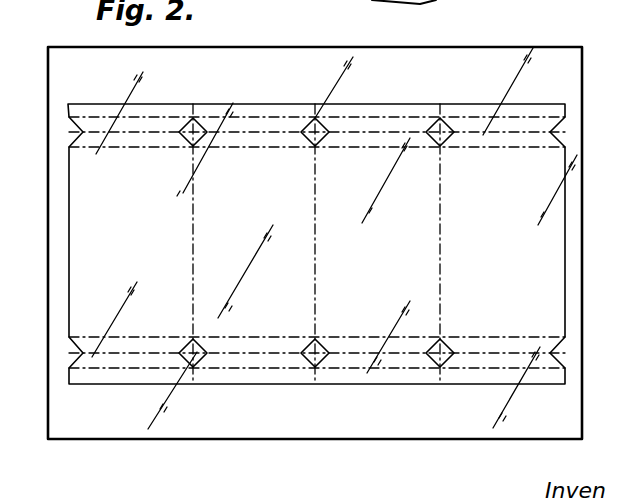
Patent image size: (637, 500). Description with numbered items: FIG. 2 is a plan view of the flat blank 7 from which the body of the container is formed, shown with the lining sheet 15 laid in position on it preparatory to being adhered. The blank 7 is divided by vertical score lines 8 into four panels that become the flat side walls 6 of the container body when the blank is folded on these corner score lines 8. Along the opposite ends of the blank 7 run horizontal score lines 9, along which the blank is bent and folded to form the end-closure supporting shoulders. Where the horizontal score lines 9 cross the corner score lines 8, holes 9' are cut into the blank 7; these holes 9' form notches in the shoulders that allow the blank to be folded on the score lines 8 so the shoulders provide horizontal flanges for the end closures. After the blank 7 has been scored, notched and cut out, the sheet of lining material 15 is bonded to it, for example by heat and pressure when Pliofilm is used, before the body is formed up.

The sheet of lining material 15 is at (198, 424).
The blank 7 is at (67, 210).
The horizontal score lines 9 is at (317, 241).
The score lines 8 is at (185, 259).
The side walls 6 is at (146, 216).
The holes 9' is at (327, 221).